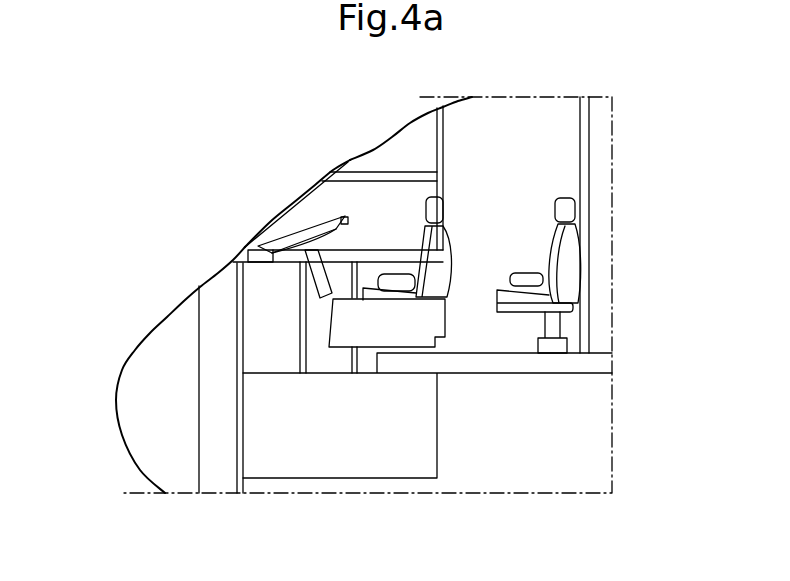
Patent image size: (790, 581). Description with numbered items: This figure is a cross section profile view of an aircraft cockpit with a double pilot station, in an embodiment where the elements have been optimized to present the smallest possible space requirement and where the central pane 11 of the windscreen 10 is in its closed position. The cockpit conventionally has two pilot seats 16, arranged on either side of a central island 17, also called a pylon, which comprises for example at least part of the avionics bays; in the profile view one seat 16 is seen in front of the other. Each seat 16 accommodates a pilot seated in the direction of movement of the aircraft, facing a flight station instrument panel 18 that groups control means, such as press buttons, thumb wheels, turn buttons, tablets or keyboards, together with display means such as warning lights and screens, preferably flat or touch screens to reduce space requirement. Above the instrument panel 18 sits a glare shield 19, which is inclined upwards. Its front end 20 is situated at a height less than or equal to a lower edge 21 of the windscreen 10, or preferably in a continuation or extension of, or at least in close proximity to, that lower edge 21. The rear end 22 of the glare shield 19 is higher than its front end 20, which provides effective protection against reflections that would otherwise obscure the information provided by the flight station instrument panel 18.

The windscreen 10 is at (300, 192).
The central pane 11 is at (293, 208).
The pilot seat 16 is at (445, 250).
The central island 17 is at (388, 325).
The flight station instrument panel 18 is at (314, 279).
The glare shield 19 is at (305, 237).
The front end 20 is at (273, 252).
The lower edge 21 is at (243, 264).
The rear end 22 is at (333, 230).